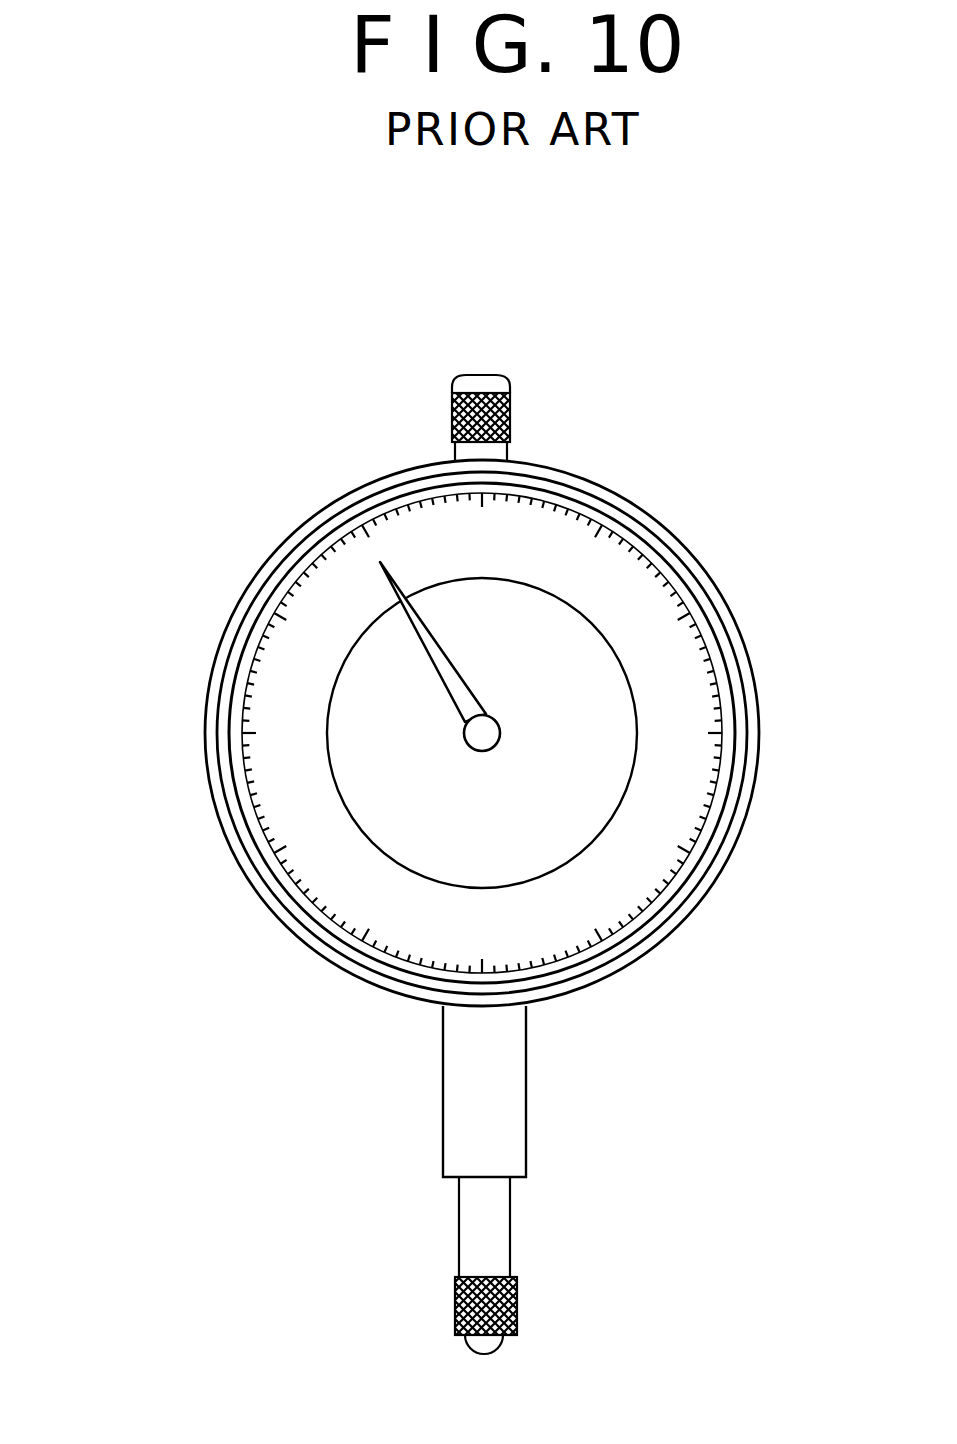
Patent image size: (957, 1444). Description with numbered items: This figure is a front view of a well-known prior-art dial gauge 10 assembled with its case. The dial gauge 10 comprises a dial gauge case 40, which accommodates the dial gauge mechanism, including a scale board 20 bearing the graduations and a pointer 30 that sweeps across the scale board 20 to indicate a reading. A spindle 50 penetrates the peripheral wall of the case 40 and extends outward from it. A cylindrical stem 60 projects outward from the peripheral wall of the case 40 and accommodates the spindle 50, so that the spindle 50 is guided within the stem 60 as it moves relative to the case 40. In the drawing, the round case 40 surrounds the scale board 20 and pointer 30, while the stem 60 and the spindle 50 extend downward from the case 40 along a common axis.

The dial gauge 10 is at (232, 520).
The scale board 20 is at (633, 597).
The pointer 30 is at (445, 663).
The dial gauge case 40 is at (682, 915).
The spindle 50 is at (497, 1215).
The stem 60 is at (510, 1072).